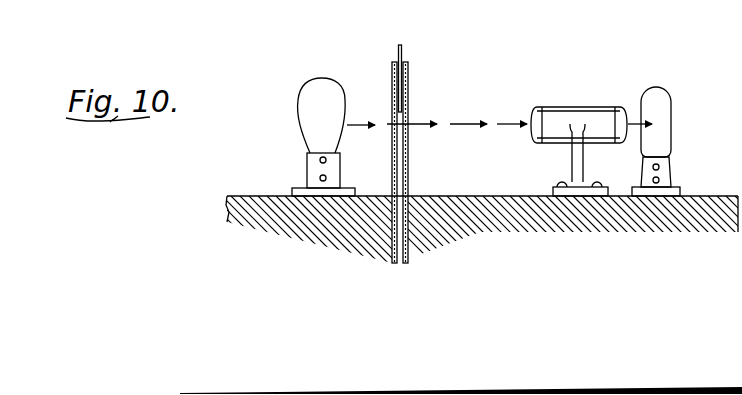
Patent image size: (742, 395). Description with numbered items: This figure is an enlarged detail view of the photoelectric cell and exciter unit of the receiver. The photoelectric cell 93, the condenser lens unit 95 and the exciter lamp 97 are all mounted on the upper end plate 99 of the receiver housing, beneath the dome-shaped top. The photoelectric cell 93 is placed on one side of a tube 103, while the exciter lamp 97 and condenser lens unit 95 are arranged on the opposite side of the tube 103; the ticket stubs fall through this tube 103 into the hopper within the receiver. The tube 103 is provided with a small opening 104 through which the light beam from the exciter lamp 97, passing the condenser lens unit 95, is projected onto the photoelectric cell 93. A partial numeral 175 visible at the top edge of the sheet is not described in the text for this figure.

The photoelectric cell 93 is at (308, 101).
The condenser lens unit 95 is at (564, 110).
The exciter lamp 97 is at (663, 112).
The upper end plate 99 is at (722, 197).
The tube 103 is at (429, 154).
The small opening 104 is at (409, 119).
The partial numeral (adjacent figure) 175 is at (516, 5).